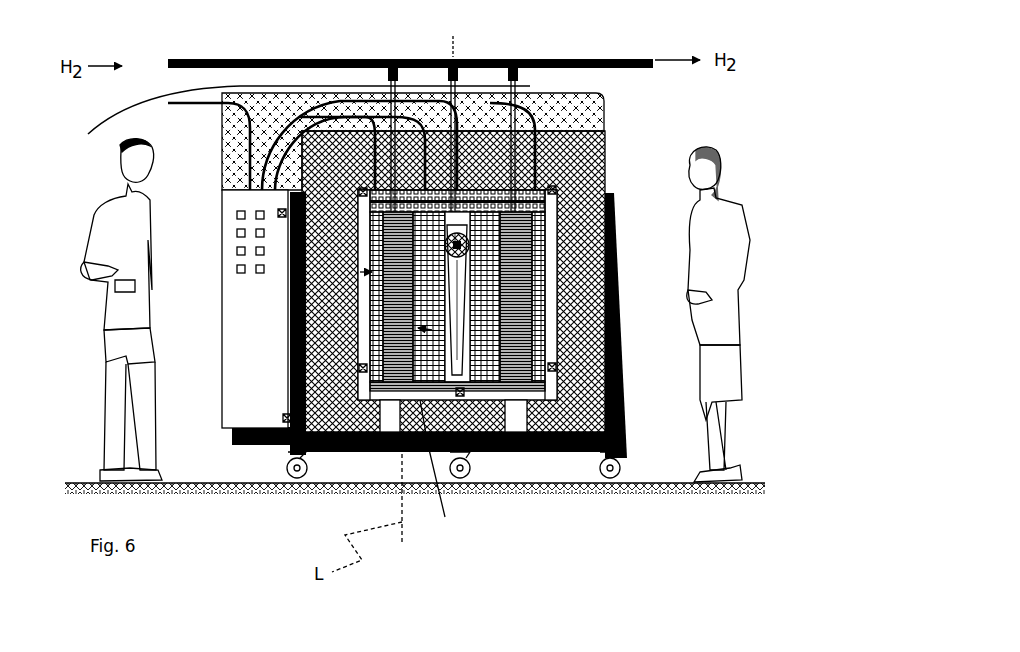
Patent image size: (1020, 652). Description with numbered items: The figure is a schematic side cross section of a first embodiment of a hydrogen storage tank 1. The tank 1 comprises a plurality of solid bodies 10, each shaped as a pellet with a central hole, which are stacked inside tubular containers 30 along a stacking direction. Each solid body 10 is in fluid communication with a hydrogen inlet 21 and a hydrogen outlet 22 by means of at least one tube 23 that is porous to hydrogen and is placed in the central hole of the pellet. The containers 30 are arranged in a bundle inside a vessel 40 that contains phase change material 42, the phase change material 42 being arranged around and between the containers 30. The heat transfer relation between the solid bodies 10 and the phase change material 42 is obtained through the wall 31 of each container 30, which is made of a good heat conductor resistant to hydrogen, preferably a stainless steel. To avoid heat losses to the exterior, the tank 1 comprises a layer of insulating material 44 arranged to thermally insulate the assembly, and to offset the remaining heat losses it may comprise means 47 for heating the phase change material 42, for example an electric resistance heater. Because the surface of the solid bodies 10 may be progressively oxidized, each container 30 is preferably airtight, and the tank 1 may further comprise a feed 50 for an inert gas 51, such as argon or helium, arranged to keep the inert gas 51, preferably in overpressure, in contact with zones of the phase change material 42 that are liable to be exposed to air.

The tank 1 is at (100, 92).
The solid body 10 is at (514, 364).
The hydrogen inlet 21 is at (167, 63).
The hydrogen outlet 22 is at (655, 65).
The tube 23 is at (302, 315).
The tubular container 30 is at (605, 250).
The wall 31 is at (545, 218).
The vessel 40 is at (627, 370).
The phase change material 42 is at (627, 417).
The layer of insulating material 44 is at (524, 311).
The means for heating the phase change material 47 is at (413, 453).
The inert gas feed 50 is at (547, 97).
The inert gas 51 is at (503, 188).